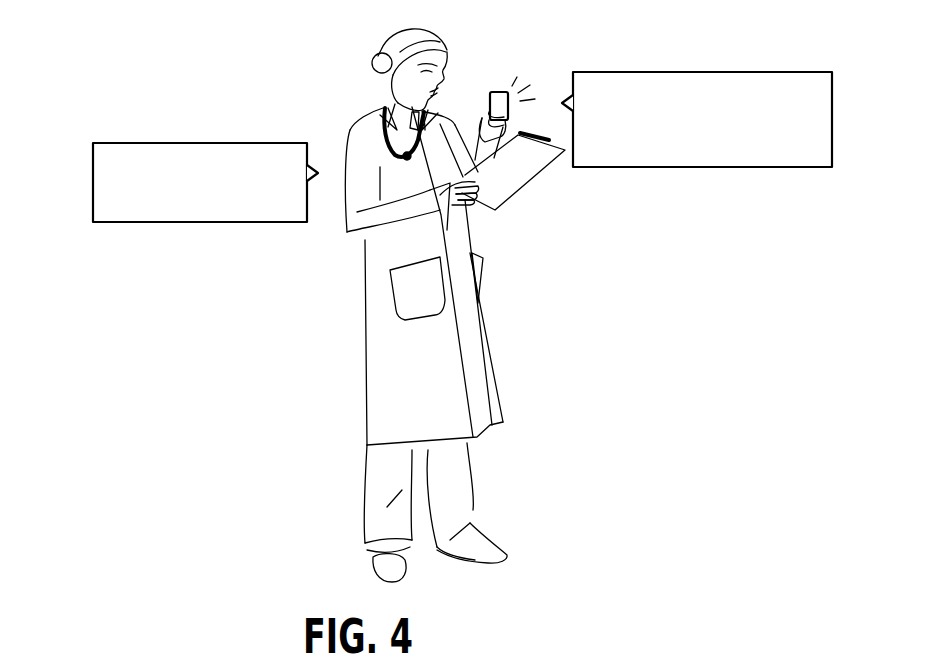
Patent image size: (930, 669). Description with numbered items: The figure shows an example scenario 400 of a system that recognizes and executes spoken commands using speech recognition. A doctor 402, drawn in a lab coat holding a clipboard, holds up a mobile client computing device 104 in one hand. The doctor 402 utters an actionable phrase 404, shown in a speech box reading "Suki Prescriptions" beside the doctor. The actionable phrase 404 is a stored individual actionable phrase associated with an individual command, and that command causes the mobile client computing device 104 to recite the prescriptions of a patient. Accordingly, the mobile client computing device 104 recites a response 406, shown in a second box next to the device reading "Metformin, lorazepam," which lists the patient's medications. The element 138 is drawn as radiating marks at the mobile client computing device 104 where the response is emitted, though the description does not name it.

The scenario 400 is at (158, 70).
The doctor 402 is at (339, 278).
The actionable phrase 404 is at (215, 213).
The response 406 is at (730, 153).
The mobile client computing device 104 is at (491, 93).
The indicator / output of mobile device 138 is at (504, 92).